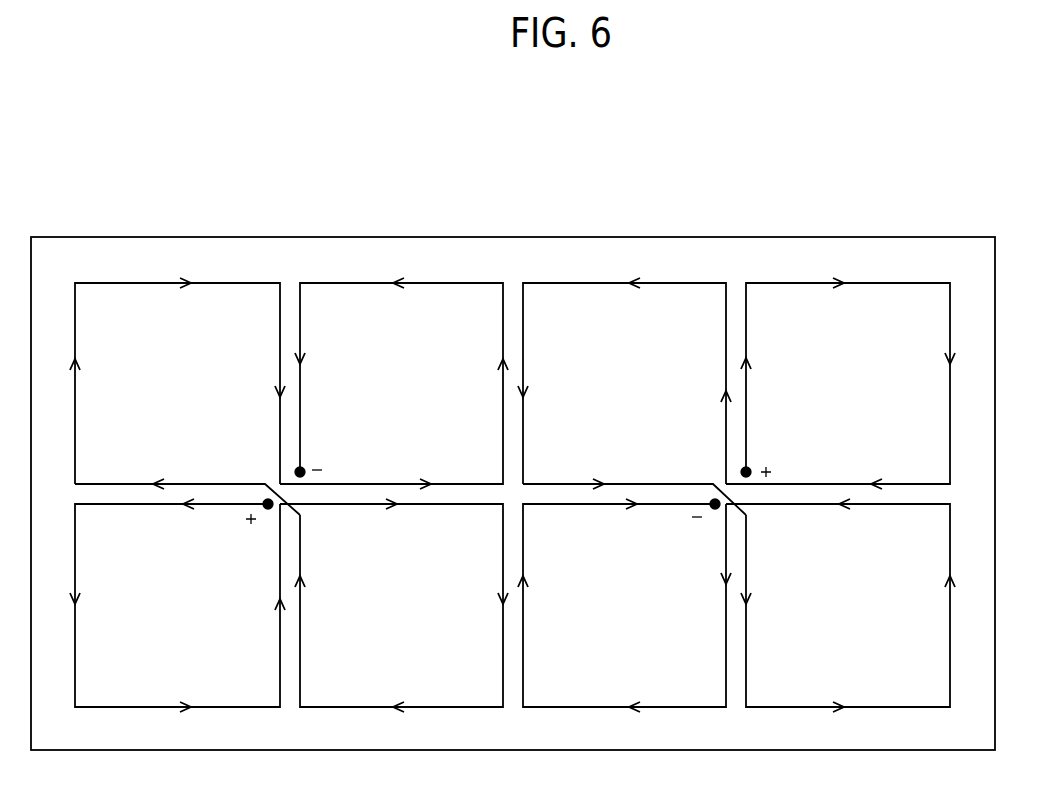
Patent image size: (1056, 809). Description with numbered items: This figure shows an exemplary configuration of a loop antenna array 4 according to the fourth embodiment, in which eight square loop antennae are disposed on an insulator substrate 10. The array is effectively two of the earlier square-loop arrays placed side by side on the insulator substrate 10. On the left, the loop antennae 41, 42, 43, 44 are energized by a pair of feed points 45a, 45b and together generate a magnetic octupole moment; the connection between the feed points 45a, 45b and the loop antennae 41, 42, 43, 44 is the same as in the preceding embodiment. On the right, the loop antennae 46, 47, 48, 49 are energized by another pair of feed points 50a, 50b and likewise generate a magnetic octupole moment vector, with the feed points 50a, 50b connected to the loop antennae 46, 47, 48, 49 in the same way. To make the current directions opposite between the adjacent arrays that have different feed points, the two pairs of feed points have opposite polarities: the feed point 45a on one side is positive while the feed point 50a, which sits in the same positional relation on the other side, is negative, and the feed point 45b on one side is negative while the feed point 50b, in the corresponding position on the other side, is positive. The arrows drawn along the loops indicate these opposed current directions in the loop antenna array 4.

The loop antenna array 4 is at (673, 188).
The insulator substrate 10 is at (790, 237).
The loop antenna 41 is at (77, 643).
The loop antenna 42 is at (302, 643).
The loop antenna 43 is at (77, 405).
The loop antenna 44 is at (302, 405).
The feed point 45a is at (268, 509).
The feed point 45b is at (306, 468).
The loop antenna 46 is at (526, 643).
The loop antenna 47 is at (748, 643).
The loop antenna 48 is at (525, 418).
The loop antenna 49 is at (748, 405).
The feed point 50a is at (714, 509).
The feed point 50b is at (752, 468).